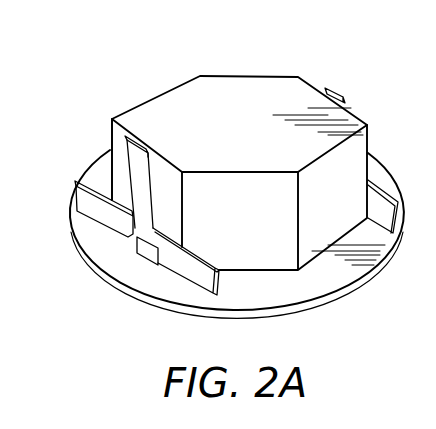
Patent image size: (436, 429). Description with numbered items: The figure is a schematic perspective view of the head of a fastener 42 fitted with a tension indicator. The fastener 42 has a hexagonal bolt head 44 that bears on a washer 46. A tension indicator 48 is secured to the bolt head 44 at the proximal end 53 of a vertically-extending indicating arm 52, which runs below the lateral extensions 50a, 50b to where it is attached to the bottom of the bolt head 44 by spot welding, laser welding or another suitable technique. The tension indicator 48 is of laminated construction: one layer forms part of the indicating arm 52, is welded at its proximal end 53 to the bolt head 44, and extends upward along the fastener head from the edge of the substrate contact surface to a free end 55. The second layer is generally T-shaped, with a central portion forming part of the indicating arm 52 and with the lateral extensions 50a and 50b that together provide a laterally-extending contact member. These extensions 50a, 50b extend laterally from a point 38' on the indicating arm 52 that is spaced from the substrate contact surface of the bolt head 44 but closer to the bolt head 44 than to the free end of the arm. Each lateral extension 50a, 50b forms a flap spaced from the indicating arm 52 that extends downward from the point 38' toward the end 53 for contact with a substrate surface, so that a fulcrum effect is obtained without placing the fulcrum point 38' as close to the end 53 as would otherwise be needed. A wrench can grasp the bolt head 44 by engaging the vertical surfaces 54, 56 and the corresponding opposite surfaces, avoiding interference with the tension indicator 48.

The fastener 42 is at (255, 136).
The hexagonal bolt head 44 is at (302, 92).
The washer 46 is at (293, 293).
The tension indicator 48 is at (128, 178).
The lateral extension 50a is at (76, 211).
The lateral extension 50b is at (179, 270).
The indicating arm 52 is at (178, 162).
The proximal end 53 is at (136, 252).
The vertical surface 54 is at (256, 231).
The free end 55 is at (132, 138).
The vertical surface 56 is at (351, 210).
The fulcrum point 38' is at (71, 190).